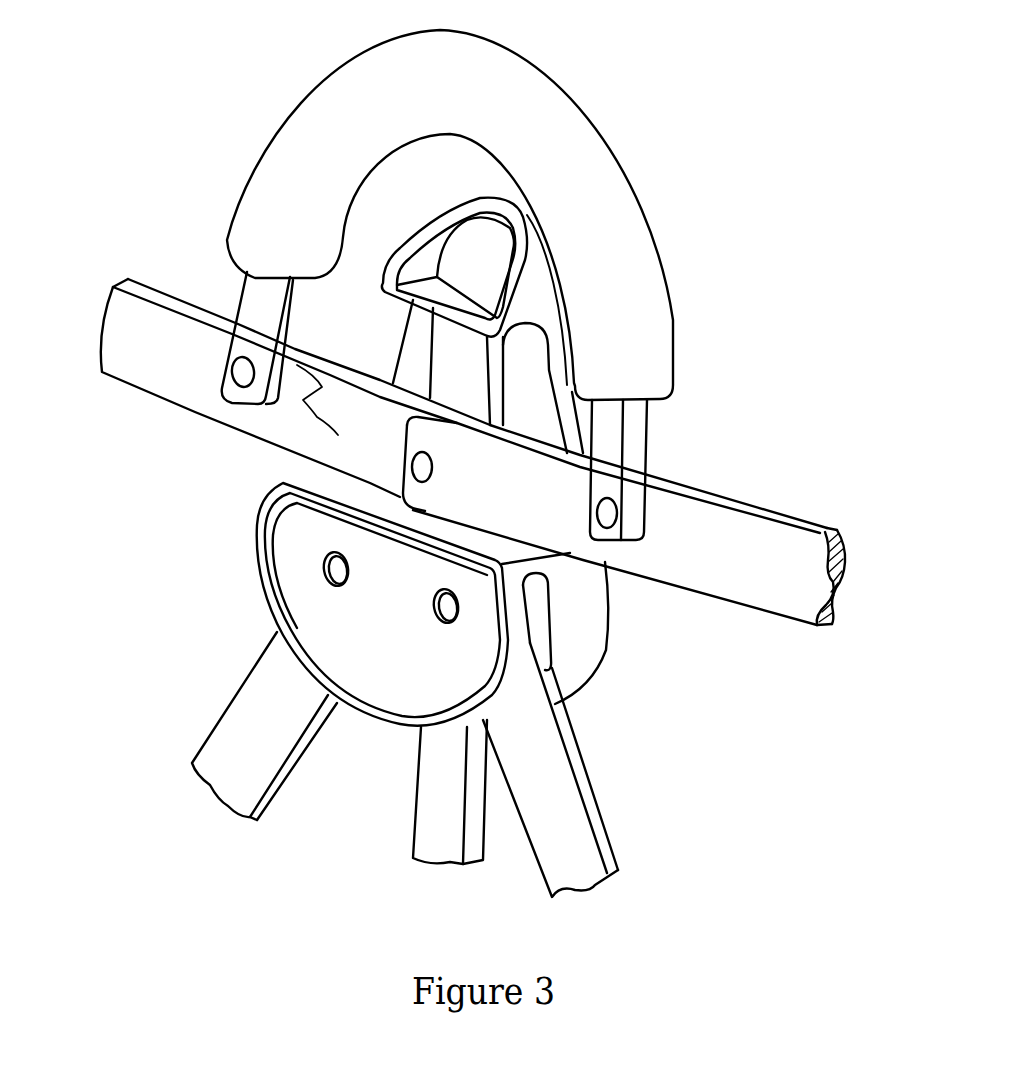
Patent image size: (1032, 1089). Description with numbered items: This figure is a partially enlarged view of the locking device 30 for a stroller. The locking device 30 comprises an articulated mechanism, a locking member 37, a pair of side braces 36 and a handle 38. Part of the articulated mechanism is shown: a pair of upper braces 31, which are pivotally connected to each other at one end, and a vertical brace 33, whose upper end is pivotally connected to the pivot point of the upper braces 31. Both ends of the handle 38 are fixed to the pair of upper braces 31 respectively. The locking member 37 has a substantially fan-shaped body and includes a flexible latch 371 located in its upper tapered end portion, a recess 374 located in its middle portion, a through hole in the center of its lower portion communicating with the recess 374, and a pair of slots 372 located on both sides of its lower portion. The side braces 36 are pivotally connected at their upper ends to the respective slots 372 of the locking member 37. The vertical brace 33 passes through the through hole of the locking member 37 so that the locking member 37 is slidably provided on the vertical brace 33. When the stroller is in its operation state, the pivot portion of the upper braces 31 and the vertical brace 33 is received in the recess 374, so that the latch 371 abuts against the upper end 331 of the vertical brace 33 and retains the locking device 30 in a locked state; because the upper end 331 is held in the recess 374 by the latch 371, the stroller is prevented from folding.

The locking device 30 is at (775, 141).
The upper braces 31 is at (148, 373).
The vertical brace 33 is at (432, 775).
The upper end of the vertical brace 331 is at (460, 345).
The side braces 36 is at (250, 717).
The locking member 37 is at (262, 582).
The flexible latch 371 is at (412, 298).
The slots 372 is at (540, 602).
The recess 374 is at (415, 353).
The handle 38 is at (598, 175).